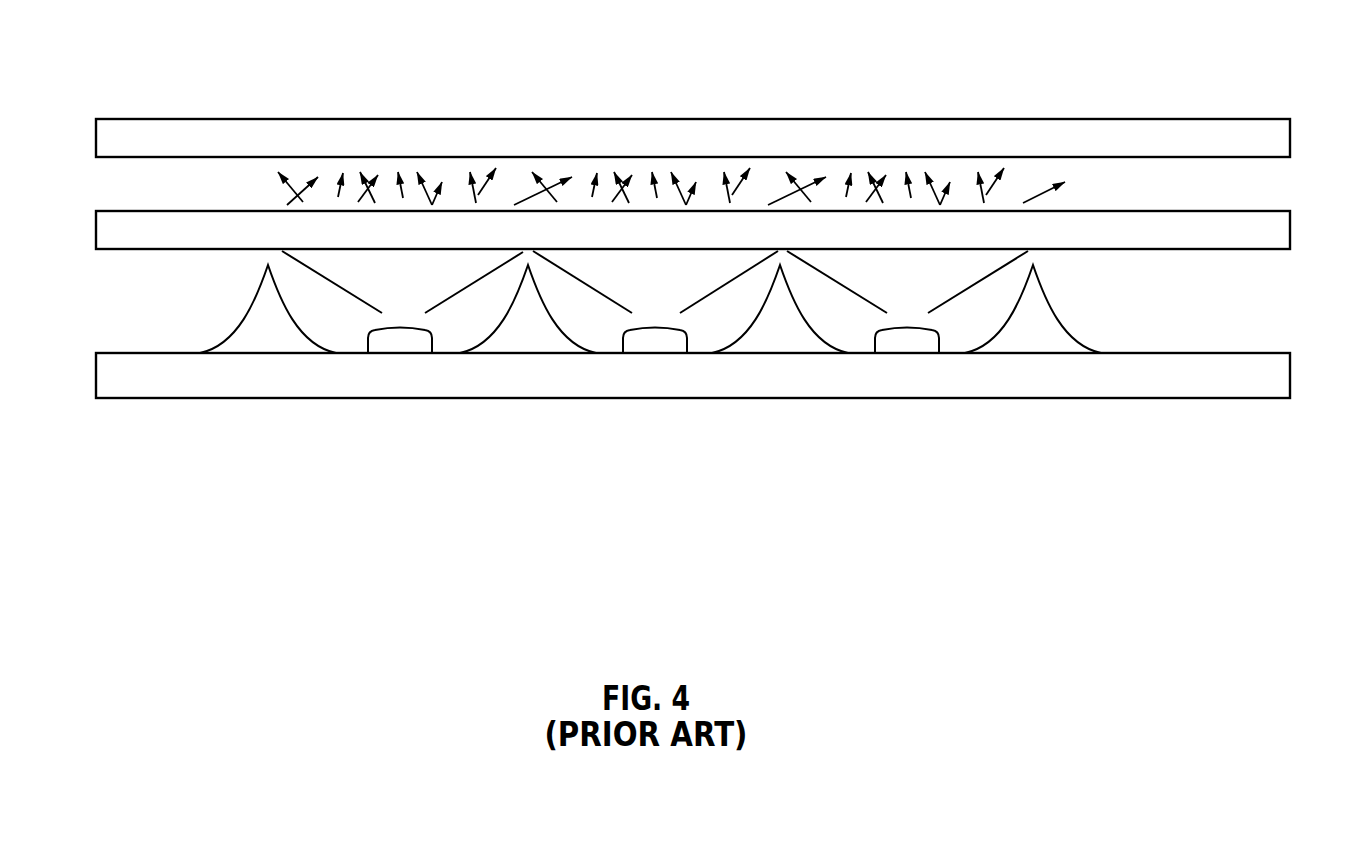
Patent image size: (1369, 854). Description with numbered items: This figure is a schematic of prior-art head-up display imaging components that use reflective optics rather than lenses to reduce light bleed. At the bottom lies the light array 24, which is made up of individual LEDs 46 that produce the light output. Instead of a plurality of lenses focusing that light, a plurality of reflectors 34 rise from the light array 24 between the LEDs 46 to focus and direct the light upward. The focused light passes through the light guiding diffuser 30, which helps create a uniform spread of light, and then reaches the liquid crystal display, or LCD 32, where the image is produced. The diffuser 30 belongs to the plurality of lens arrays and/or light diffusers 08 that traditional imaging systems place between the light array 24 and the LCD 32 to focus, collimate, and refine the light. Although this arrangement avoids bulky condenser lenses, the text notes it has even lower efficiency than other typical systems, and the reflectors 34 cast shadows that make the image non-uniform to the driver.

The plurality of lens arrays and/or light diffusers 08 is at (88, 190).
The light array 24 is at (1290, 378).
The light guiding diffuser 30 is at (1290, 229).
The liquid crystal display (LCD) 32 is at (1290, 137).
The reflectors 34 is at (1032, 318).
The LEDs 46 is at (398, 345).